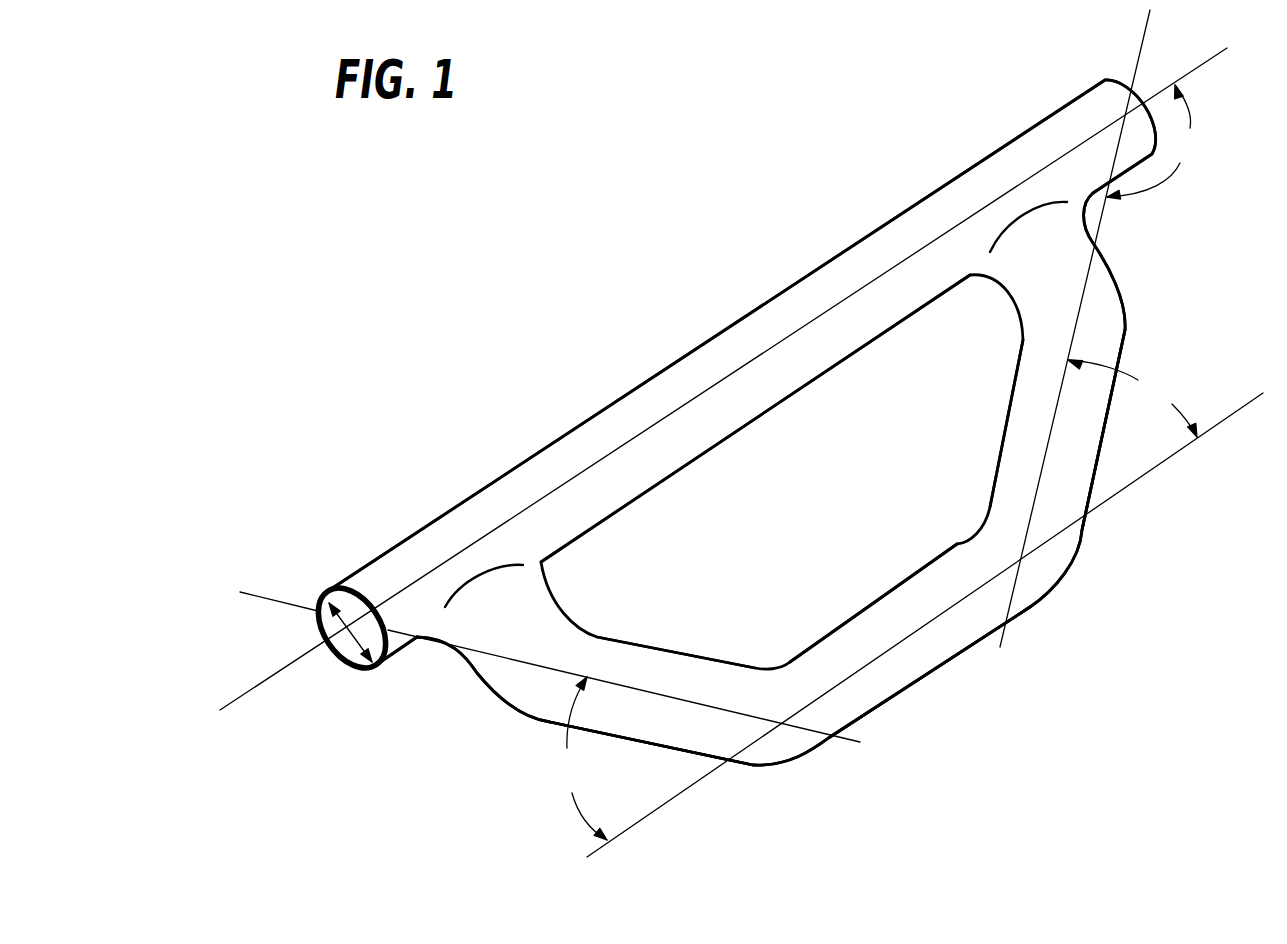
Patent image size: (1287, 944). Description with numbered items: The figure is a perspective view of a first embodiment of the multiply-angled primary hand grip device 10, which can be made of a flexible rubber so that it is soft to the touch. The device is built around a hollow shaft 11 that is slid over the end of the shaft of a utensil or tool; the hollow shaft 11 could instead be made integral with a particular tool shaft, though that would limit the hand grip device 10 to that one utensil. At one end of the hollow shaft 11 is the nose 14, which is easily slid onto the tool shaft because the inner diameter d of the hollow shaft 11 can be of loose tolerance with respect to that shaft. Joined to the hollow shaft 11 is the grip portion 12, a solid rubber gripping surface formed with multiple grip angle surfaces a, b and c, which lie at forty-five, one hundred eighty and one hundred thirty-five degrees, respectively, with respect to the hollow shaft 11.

The hand grip device 10 is at (685, 292).
The hollow shaft 11 is at (567, 450).
The grip portion 12 is at (876, 740).
The nose 14 is at (343, 662).
The grip angle surface a is at (707, 723).
The grip angle surface b is at (937, 633).
The grip angle surface c is at (1080, 463).
The inner diameter d is at (350, 632).